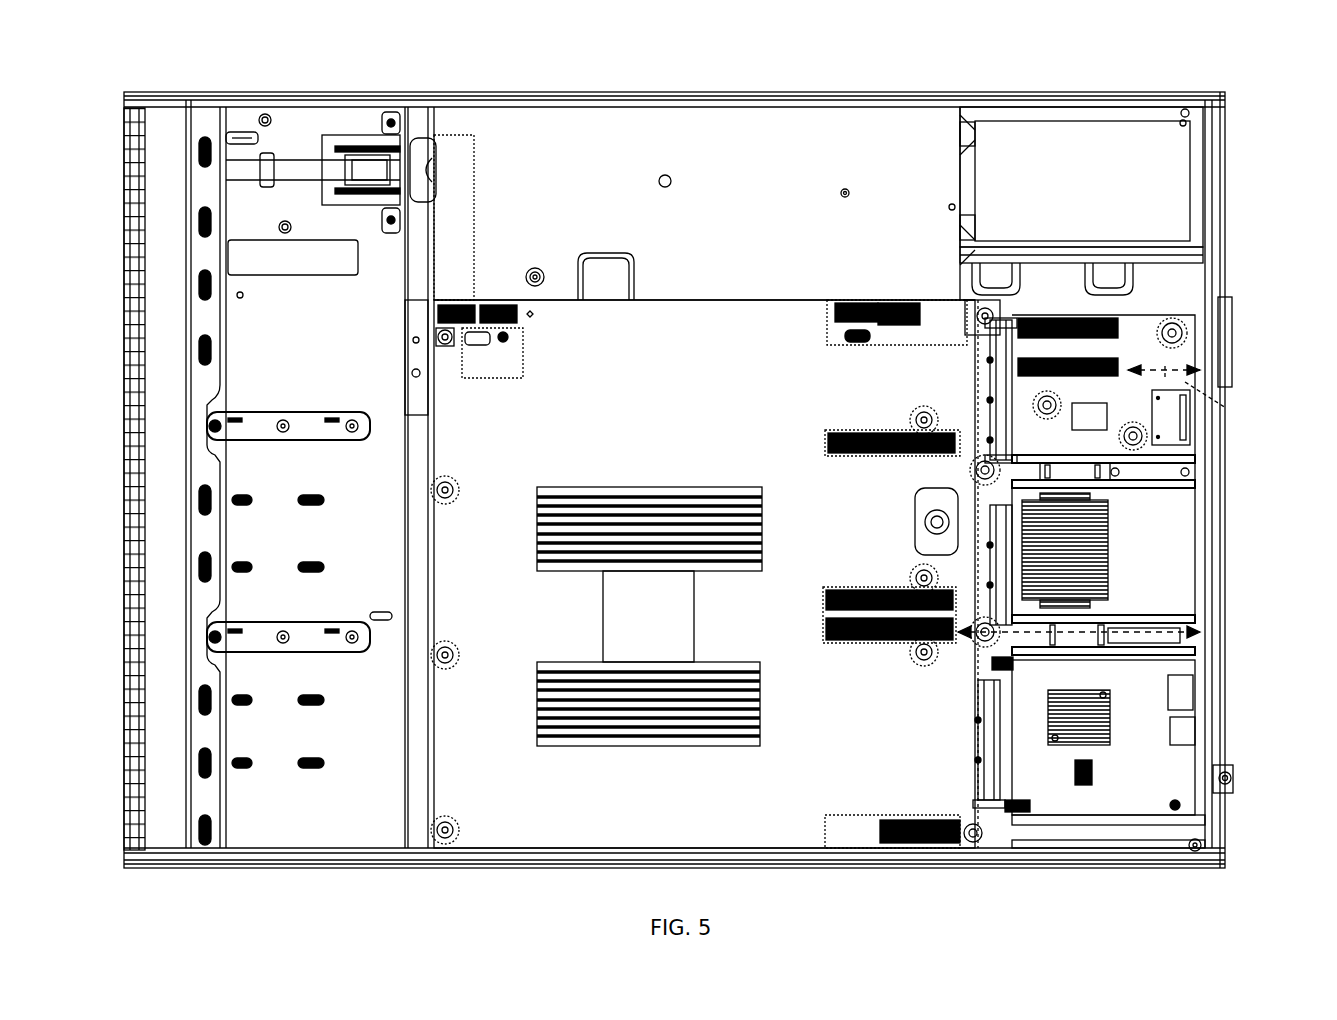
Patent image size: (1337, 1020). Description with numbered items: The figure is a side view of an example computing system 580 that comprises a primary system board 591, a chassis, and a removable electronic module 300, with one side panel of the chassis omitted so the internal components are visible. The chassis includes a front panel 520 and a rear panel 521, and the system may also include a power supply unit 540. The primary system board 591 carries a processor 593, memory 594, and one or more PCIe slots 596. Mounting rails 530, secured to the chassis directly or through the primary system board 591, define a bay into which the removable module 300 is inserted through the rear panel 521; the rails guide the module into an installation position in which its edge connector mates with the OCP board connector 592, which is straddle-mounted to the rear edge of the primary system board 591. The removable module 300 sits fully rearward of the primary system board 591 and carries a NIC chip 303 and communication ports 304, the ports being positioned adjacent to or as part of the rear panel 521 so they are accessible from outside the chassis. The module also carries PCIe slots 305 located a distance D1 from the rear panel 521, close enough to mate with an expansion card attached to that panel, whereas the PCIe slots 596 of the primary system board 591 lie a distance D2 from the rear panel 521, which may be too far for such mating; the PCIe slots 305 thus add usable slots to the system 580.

The computing system 580 is at (722, 62).
The front panel 520 is at (214, 118).
The rear panel 521 is at (1228, 118).
The power supply unit 540 is at (1030, 165).
The OCP board connector 592 is at (1010, 312).
The mounting rails 530 is at (1003, 335).
The PCIe slots 305 is at (1123, 362).
The removable electronic module 300 is at (1185, 348).
The communication ports 304 is at (1093, 425).
The NIC chip 303 is at (1055, 462).
The distance D1 is at (1222, 408).
The distance D2 is at (1077, 645).
The primary system board 591 is at (635, 812).
The processor 593 is at (684, 632).
The memory 594 is at (545, 746).
The PCIe slots 596 is at (968, 642).